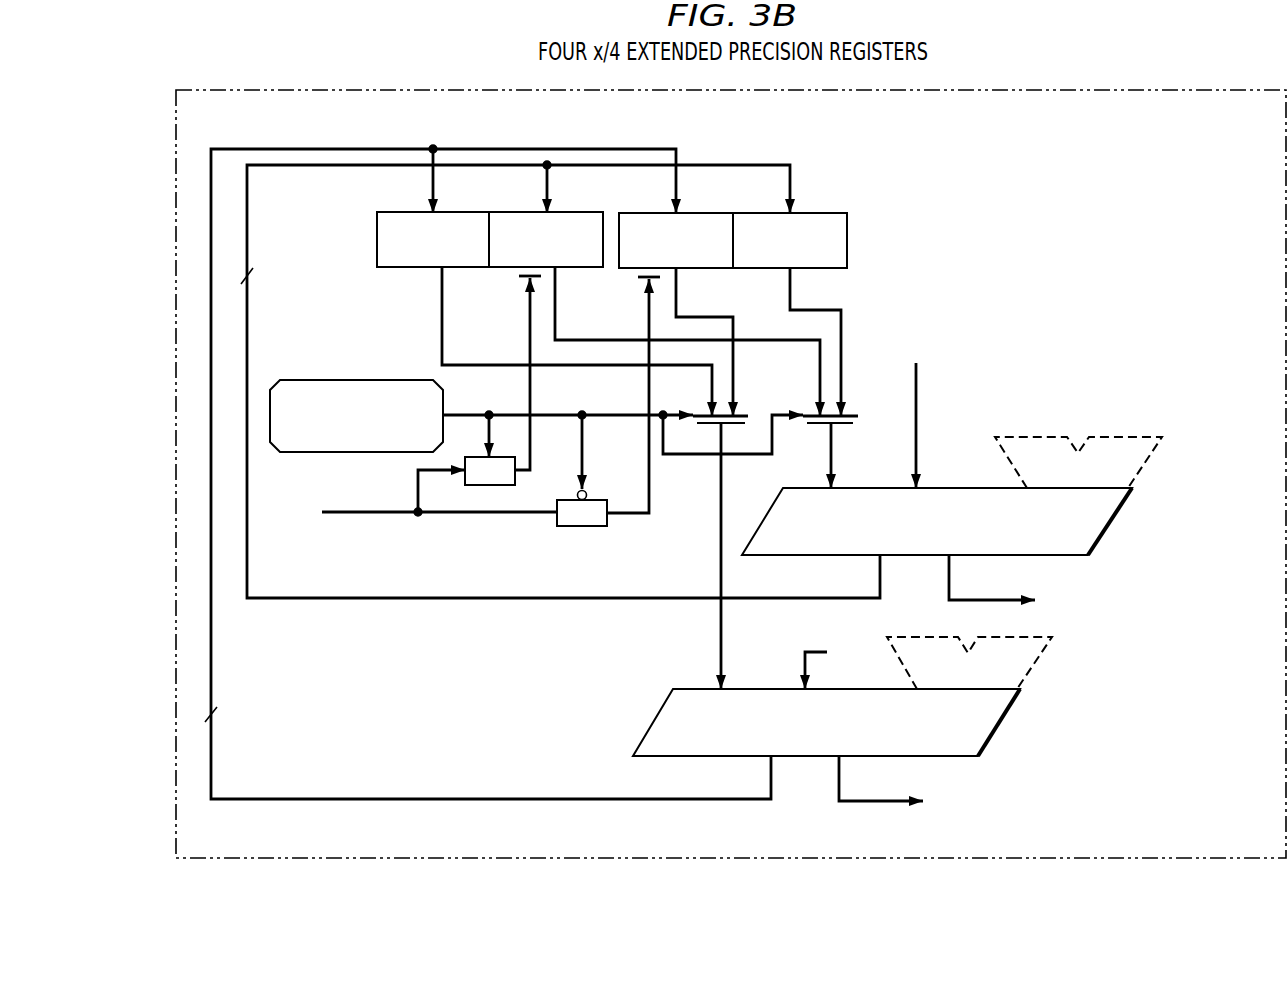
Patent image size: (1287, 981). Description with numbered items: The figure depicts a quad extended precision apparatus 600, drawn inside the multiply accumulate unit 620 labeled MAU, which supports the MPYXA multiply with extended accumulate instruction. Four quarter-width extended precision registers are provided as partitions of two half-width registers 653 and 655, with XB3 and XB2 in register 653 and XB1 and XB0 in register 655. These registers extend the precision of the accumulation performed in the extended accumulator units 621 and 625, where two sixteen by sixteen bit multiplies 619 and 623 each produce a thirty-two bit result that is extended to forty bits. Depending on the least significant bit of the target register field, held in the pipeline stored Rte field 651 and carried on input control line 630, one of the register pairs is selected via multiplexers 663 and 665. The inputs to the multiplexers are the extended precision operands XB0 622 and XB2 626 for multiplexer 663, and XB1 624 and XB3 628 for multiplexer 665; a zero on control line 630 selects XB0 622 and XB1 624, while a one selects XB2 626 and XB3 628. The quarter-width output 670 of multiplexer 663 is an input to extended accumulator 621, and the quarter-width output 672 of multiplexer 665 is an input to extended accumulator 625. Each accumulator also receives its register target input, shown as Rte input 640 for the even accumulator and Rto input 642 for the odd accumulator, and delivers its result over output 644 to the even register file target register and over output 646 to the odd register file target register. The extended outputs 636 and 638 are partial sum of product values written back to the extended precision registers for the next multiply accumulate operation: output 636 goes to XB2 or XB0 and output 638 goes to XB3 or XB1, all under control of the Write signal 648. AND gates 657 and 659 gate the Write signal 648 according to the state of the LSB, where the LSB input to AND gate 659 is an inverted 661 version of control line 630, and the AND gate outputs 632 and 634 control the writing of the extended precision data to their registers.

The quad extended precision apparatus 600 is at (238, 70).
The multiply accumulate unit (MAU) 620 is at (177, 110).
The 16x16-bit multiply 619 is at (1140, 473).
The extended accumulator 621 is at (1105, 539).
The XB0 extended precision input operand 622 is at (790, 300).
The 16x16-bit multiply 623 is at (1032, 675).
The XB1 register output line 624 is at (676, 306).
The extended accumulator 625 is at (993, 740).
The XB2 extended precision input operand 626 is at (556, 330).
The XB3 extended precision input operand 628 is at (443, 330).
The input control line 630 is at (593, 413).
The AND gate output 632 is at (527, 402).
The AND gate output 634 is at (650, 500).
The extended output 636 is at (420, 598).
The extended output 638 is at (455, 799).
The Rte input line 640 is at (917, 405).
The Rto input line 642 is at (805, 652).
The output to even register file target register 644 is at (949, 586).
The output to odd register file target register 646 is at (839, 791).
The Write signal 648 is at (375, 518).
The Rte field 651 is at (322, 380).
The (x/2)-bit register 653 is at (376, 243).
The (x/2)-bit register 655 is at (848, 245).
The AND gate 657 is at (490, 486).
The AND gate 659 is at (575, 527).
The inverted input 661 is at (587, 492).
The multiplexer 663 is at (858, 416).
The multiplexer 665 is at (749, 416).
The multiplexer output 670 is at (832, 458).
The multiplexer output 672 is at (720, 545).